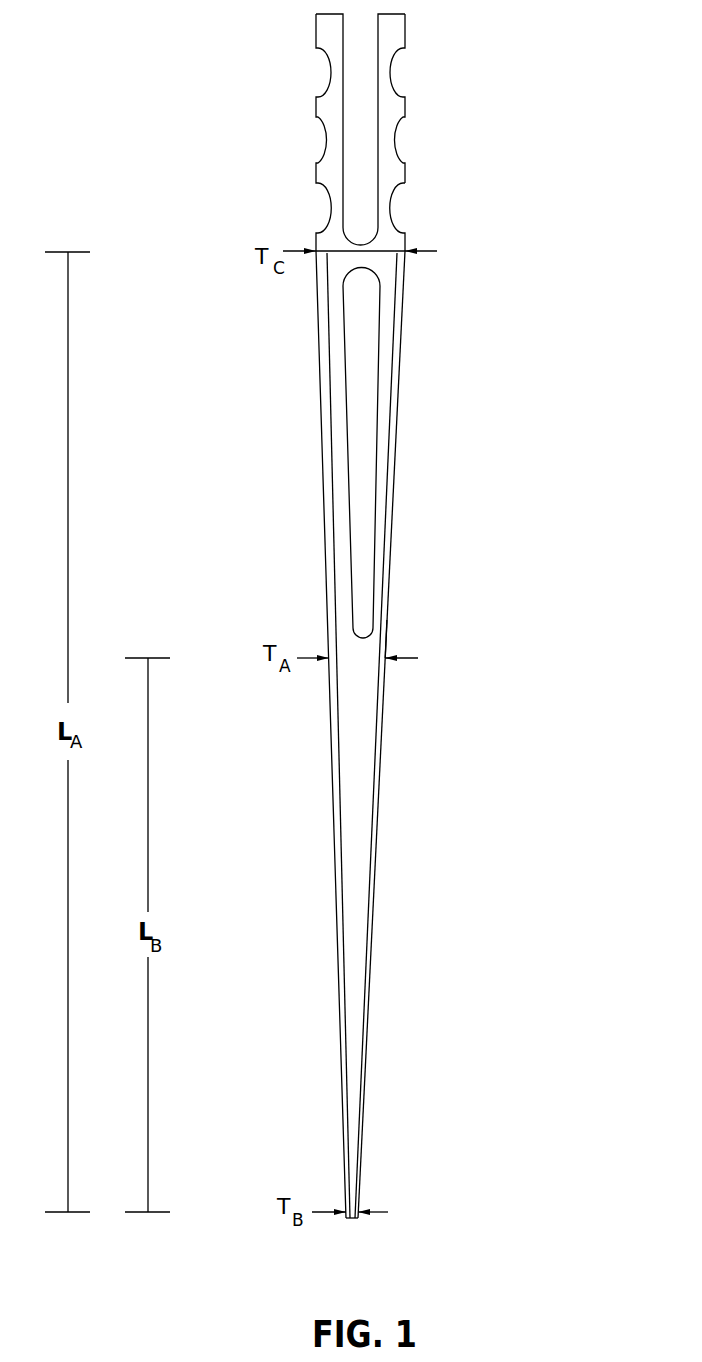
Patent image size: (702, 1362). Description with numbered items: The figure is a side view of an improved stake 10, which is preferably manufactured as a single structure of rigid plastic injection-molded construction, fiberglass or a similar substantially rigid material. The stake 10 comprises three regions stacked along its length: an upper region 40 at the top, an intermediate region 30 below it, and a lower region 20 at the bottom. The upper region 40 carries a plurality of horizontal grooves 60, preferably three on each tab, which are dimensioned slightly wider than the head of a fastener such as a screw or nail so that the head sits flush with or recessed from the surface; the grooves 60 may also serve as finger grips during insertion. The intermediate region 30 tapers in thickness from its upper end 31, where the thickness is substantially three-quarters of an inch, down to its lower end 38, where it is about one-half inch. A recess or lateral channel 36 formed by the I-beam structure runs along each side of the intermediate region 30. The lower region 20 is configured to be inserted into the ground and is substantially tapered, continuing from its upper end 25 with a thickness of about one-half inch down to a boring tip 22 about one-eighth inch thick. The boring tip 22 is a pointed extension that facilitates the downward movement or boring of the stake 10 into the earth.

The stake 10 is at (448, 644).
The lower region 20 is at (372, 937).
The boring tip 22 is at (355, 1220).
The upper end of the lower region 25 is at (388, 644).
The intermediate region 30 is at (397, 465).
The upper end of the intermediate region 31 is at (405, 271).
The lateral channel 36 is at (370, 370).
The lower end of the intermediate region 38 is at (388, 636).
The upper region 40 is at (395, 137).
The horizontal groove 60 is at (395, 205).